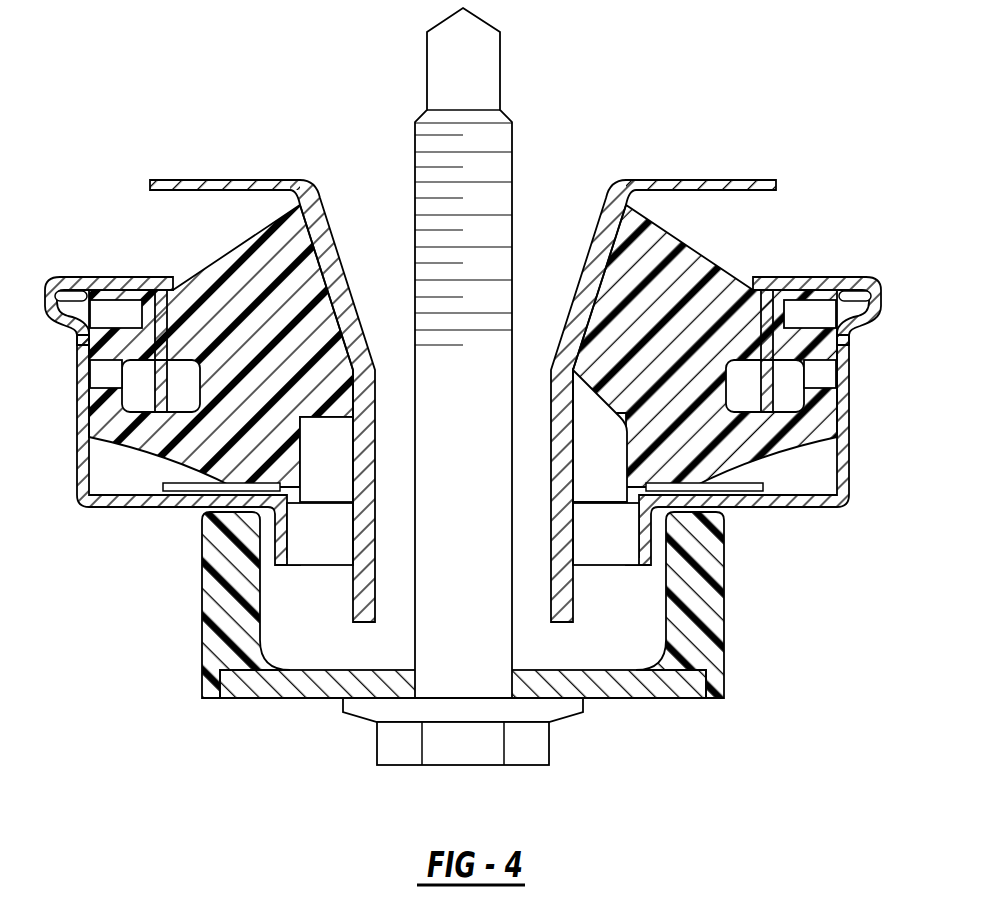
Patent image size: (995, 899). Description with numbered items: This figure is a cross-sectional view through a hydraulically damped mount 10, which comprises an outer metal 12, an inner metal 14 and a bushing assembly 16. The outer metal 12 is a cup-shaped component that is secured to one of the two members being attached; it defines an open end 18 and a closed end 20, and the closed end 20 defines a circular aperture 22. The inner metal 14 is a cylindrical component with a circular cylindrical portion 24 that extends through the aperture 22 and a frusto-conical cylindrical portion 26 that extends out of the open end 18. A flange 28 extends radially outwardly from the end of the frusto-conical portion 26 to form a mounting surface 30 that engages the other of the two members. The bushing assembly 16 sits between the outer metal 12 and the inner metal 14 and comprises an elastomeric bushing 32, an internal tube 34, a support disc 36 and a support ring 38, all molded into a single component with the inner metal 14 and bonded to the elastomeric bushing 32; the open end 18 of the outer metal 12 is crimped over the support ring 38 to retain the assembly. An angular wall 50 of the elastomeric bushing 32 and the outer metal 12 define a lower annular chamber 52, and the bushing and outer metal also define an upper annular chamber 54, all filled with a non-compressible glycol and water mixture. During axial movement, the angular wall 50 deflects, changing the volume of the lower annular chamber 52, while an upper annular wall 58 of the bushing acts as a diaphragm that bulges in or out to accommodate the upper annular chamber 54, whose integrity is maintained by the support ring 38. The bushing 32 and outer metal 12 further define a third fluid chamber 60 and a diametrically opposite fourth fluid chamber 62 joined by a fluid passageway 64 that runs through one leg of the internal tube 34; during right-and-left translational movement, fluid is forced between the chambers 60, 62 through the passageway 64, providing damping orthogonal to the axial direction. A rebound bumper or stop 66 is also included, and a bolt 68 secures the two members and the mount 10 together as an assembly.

The hydraulically damped mount 10 is at (718, 92).
The outer metal 12 is at (840, 493).
The inner metal 14 is at (573, 585).
The bushing assembly 16 is at (698, 263).
The open end 18 is at (108, 277).
The closed end 20 is at (90, 507).
The circular aperture 22 is at (292, 540).
The circular cylindrical portion 24 is at (368, 540).
The frusto-conical cylindrical portion 26 is at (315, 215).
The flange 28 is at (777, 183).
The mounting surface 30 is at (233, 180).
The elastomeric bushing 32 is at (275, 278).
The internal tube 34 is at (770, 350).
The support disc 36 is at (743, 482).
The support ring 38 is at (848, 292).
The angular wall 50 is at (96, 437).
The lower annular chamber 52 is at (833, 492).
The upper annular chamber 54 is at (812, 303).
The upper annular wall 58 is at (830, 292).
The third fluid chamber 60 is at (183, 397).
The fourth fluid chamber 62 is at (747, 383).
The fluid passageway 64 is at (122, 400).
The rebound bumper or stop 66 is at (178, 656).
The bolt 68 is at (500, 60).